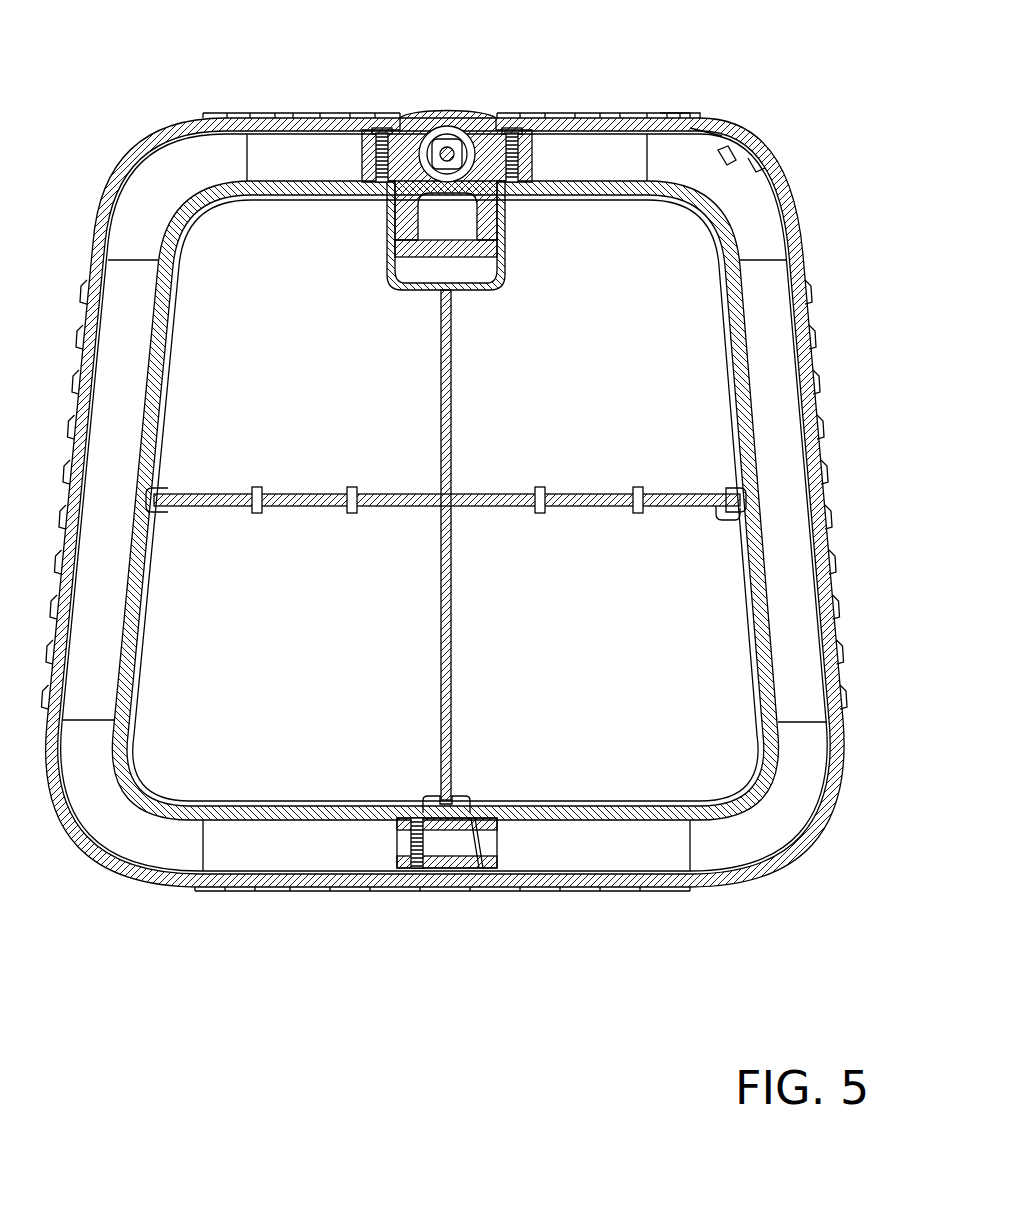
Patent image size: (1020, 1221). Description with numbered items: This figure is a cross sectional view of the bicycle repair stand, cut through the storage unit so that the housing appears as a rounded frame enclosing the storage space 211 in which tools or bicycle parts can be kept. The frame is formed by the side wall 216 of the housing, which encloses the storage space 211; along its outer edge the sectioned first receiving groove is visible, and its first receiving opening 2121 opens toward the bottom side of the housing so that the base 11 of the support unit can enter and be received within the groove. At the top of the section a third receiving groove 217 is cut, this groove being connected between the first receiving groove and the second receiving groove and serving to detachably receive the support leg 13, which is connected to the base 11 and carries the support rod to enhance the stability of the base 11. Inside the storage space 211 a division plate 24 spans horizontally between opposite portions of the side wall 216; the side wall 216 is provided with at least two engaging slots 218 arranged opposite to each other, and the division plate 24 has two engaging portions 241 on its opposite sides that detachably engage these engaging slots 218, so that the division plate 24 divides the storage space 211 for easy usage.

The base 11 is at (689, 108).
The support leg 13 is at (432, 92).
The storage space 211 is at (680, 306).
The side wall 216 is at (763, 165).
The third receiving groove 217 is at (488, 128).
The engaging slots 218 is at (753, 500).
The first receiving opening 2121 is at (730, 165).
The division plate 24 is at (678, 492).
The engaging portions 241 is at (723, 510).